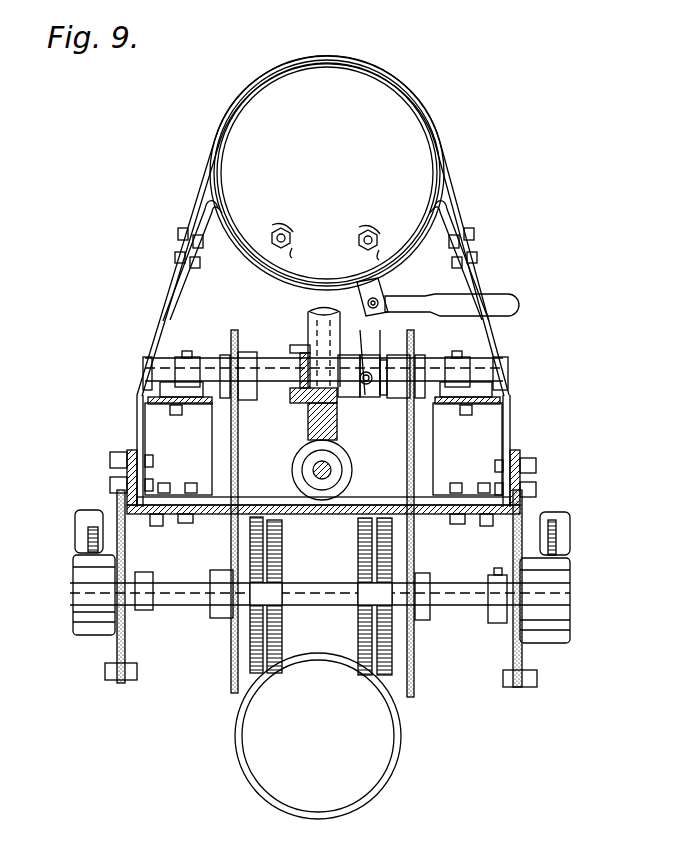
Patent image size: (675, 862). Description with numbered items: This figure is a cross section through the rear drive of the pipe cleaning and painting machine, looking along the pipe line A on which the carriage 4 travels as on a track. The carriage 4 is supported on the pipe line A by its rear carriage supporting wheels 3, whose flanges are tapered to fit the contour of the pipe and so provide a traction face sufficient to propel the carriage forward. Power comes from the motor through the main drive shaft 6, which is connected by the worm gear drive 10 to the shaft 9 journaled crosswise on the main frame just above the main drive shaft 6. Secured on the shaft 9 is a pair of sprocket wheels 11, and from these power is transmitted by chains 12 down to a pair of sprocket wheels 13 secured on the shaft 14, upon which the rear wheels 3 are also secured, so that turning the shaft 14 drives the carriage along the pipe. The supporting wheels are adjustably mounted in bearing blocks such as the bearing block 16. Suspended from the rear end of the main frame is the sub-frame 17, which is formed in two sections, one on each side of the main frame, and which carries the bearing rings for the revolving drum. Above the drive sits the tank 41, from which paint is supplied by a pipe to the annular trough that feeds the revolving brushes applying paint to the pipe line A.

The rear carriage supporting wheels 3 is at (357, 540).
The carriage 4 is at (325, 291).
The main drive shaft 6 is at (331, 470).
The shaft 9 is at (508, 371).
The worm gear drive 10 is at (316, 447).
The sprocket wheels 11 is at (226, 338).
The chains 12 is at (238, 431).
The sprocket wheels 13 is at (413, 656).
The shaft 14 is at (447, 593).
The bearing block 16 is at (570, 568).
The sub-frame 17 is at (570, 532).
The tank 41 is at (327, 173).
The pipe line A is at (318, 736).